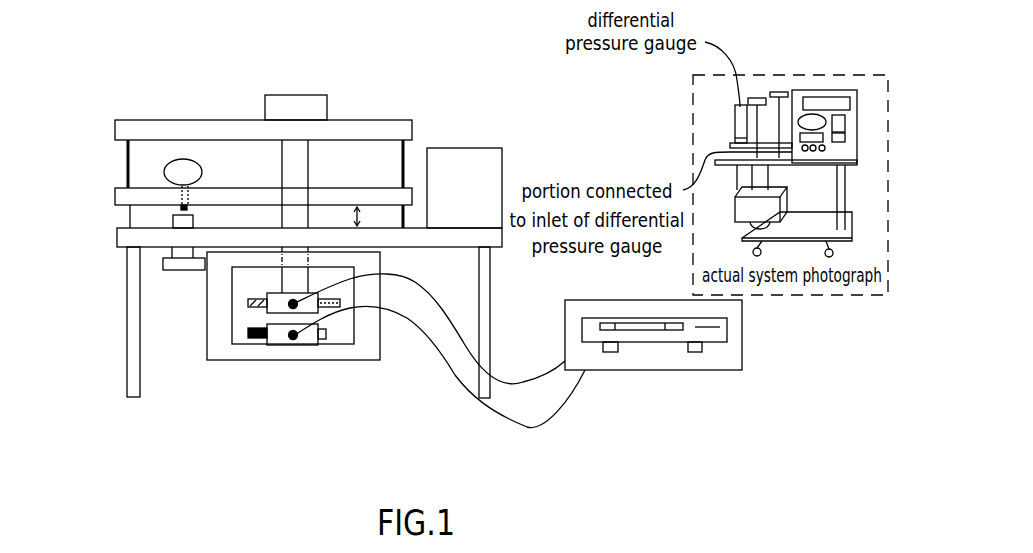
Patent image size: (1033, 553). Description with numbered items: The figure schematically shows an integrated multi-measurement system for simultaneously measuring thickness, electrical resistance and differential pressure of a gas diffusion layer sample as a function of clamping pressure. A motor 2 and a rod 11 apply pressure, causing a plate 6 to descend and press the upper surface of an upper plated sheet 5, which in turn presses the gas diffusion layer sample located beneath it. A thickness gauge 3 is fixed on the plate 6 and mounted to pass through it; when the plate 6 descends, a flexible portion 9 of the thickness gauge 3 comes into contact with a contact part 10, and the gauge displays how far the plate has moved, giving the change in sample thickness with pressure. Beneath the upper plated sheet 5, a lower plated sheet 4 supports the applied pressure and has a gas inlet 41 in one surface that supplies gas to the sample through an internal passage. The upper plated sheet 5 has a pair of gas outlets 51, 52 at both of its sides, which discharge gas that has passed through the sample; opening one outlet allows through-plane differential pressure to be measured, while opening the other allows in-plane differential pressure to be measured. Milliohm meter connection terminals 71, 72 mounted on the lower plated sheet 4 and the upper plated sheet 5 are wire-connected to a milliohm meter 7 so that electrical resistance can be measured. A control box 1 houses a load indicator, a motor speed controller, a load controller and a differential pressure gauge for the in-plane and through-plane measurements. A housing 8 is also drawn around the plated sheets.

The control box 1 is at (480, 160).
The motor 2 is at (318, 110).
The thickness gauge 3 is at (164, 172).
The lower plated sheet 4 is at (277, 339).
The upper plated sheet 5 is at (270, 295).
The plate 6 is at (128, 193).
The milliohm meter 7 is at (622, 328).
The housing 8 is at (213, 312).
The flexible portion 9 is at (180, 192).
The contact part 10 is at (173, 221).
The rod 11 is at (293, 163).
The gas inlet 41 is at (253, 340).
The gas outlet 51 is at (253, 302).
The gas outlet 52 is at (343, 308).
The milliohm meter connection terminal 71 is at (287, 338).
The milliohm meter connection terminal 72 is at (297, 307).